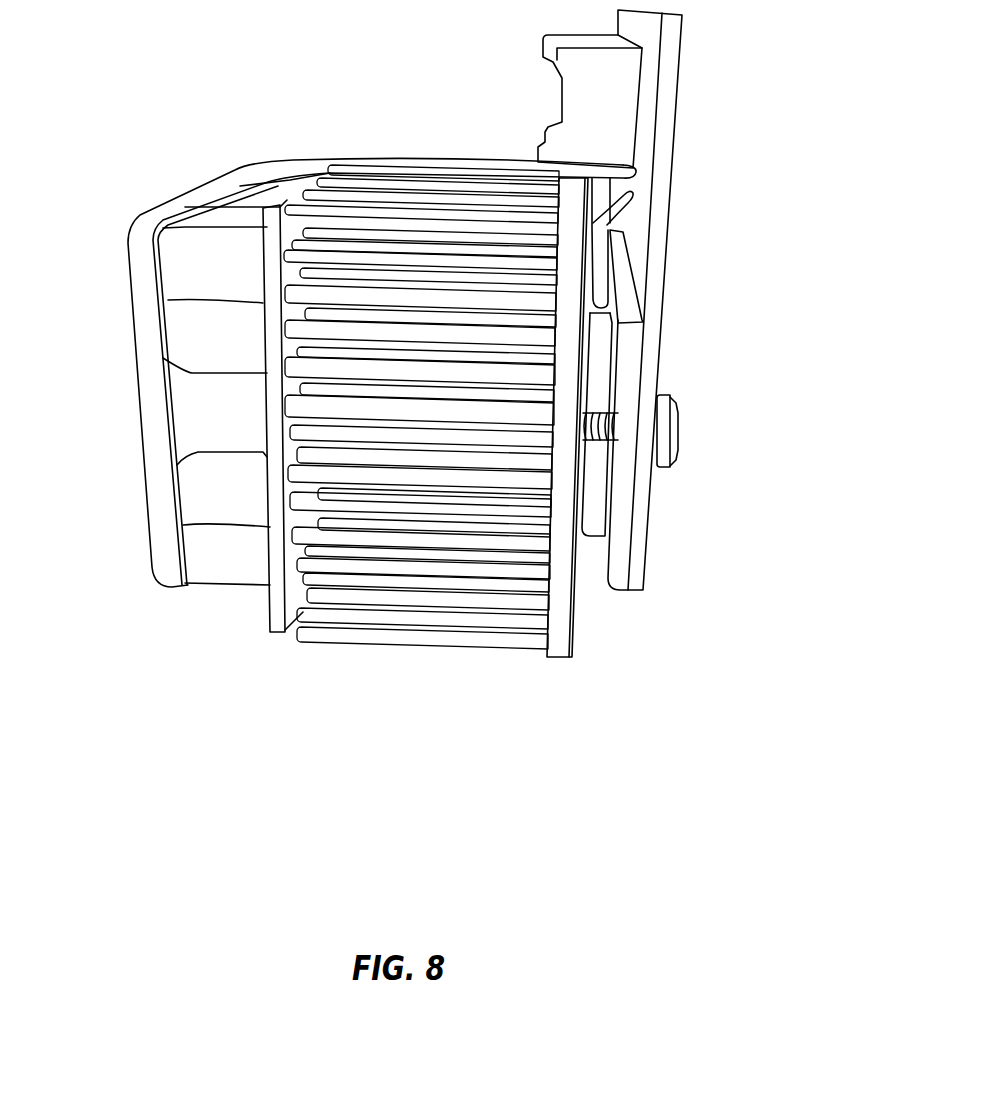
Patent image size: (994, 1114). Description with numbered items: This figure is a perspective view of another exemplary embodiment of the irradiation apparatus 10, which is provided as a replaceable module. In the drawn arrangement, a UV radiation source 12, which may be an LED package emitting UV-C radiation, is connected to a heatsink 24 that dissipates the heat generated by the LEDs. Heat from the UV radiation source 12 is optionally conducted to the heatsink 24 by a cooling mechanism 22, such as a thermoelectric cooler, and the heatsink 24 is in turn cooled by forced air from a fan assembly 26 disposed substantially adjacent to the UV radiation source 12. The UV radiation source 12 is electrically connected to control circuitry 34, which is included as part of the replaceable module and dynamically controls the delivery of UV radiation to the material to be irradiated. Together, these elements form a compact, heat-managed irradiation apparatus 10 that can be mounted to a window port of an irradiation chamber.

The irradiation apparatus 10 is at (598, 108).
The UV radiation source 12 is at (628, 365).
The cooling mechanism 22 is at (588, 507).
The heatsink 24 is at (405, 407).
The fan assembly 26 is at (248, 193).
The control circuitry 34 is at (545, 90).